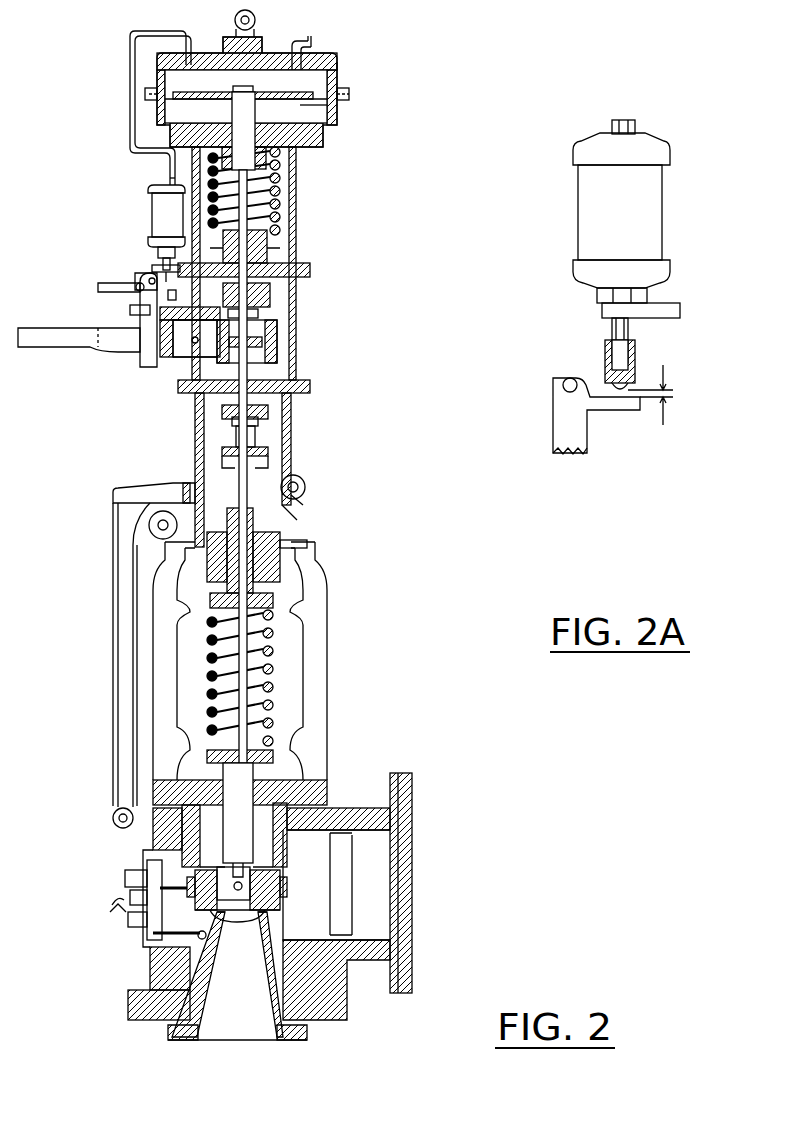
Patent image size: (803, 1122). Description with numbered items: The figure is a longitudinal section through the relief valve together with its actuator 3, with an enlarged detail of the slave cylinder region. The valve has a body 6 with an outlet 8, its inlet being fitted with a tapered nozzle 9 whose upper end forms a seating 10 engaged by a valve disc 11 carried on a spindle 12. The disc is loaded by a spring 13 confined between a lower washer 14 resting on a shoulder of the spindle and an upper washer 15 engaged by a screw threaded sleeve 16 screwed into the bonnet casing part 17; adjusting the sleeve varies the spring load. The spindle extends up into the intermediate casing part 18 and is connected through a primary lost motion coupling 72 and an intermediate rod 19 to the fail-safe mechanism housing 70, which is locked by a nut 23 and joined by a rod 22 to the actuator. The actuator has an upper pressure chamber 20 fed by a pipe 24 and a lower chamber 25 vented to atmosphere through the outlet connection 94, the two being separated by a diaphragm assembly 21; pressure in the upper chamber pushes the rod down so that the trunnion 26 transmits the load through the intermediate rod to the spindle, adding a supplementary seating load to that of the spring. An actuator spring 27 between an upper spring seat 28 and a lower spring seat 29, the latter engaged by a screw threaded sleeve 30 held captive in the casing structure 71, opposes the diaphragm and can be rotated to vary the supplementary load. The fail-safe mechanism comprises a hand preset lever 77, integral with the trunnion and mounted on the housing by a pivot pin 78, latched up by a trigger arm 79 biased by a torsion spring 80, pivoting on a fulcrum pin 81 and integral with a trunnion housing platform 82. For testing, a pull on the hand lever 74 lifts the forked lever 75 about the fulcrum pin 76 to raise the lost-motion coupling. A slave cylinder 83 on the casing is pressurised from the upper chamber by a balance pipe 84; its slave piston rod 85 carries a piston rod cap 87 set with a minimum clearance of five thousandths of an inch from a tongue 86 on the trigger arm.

In FIG. 2, the actuator 3 is at (338, 72).
In FIG. 2, the body 6 is at (165, 843).
In FIG. 2, the outlet 8 is at (398, 882).
In FIG. 2, the tapered nozzle 9 is at (190, 1030).
In FIG. 2, the seating 10 is at (265, 930).
In FIG. 2, the valve disc 11 is at (272, 890).
In FIG. 2, the spindle 12 is at (248, 820).
In FIG. 2, the spring 13 is at (272, 645).
In FIG. 2, the lower washer 14 is at (272, 756).
In FIG. 2, the upper washer 15 is at (275, 598).
In FIG. 2, the screw threaded sleeve 16 is at (258, 583).
In FIG. 2, the bonnet casing part 17 is at (265, 545).
In FIG. 2, the intermediate casing part 18 is at (291, 458).
In FIG. 2, the intermediate rod 19 is at (250, 404).
In FIG. 2, the upper pressure chamber 20 is at (270, 80).
In FIG. 2, the diaphragm assembly 21 is at (312, 92).
In FIG. 2, the rod 22 is at (250, 196).
In FIG. 2, the nut 23 is at (262, 294).
In FIG. 2, the pipe 24 is at (310, 38).
In FIG. 2, the lower chamber 25 is at (312, 113).
In FIG. 2, the trunnion 26 is at (262, 342).
In FIG. 2, the actuator spring 27 is at (168, 174).
In FIG. 2, the upper spring seat 28 is at (262, 163).
In FIG. 2, the lower spring seat 29 is at (270, 246).
In FIG. 2, the screw threaded sleeve 30 is at (292, 270).
In FIG. 2, the fail-safe mechanism housing 70 is at (277, 336).
In FIG. 2, the casing structure 71 is at (298, 158).
In FIG. 2, the primary lost motion coupling 72 is at (232, 450).
In FIG. 2, the hand lever 74 is at (112, 660).
In FIG. 2, the forked lever 75 is at (113, 492).
In FIG. 2, the fulcrum pin 76 is at (300, 488).
In FIG. 2, the hand preset lever 77 is at (70, 338).
In FIG. 2, the pivot pin 78 is at (194, 343).
In FIG. 2, the trigger arm 79 is at (170, 292).
In FIG. 2A, the trigger arm 79 is at (588, 450).
In FIG. 2, the torsion spring 80 is at (107, 290).
In FIG. 2, the fulcrum pin 81 is at (135, 277).
In FIG. 2, the trunnion housing platform 82 is at (130, 311).
In FIG. 2, the slave cylinder 83 is at (152, 215).
In FIG. 2A, the slave cylinder 83 is at (663, 226).
In FIG. 2, the balance pipe 84 is at (130, 58).
In FIG. 2, the slave piston rod 85 is at (166, 268).
In FIG. 2A, the slave piston rod 85 is at (630, 330).
In FIG. 2, the tongue 86 is at (160, 300).
In FIG. 2A, the tongue 86 is at (615, 410).
In FIG. 2A, the piston rod cap 87 is at (606, 358).
In FIG. 2, the outlet connection 94 is at (257, 315).